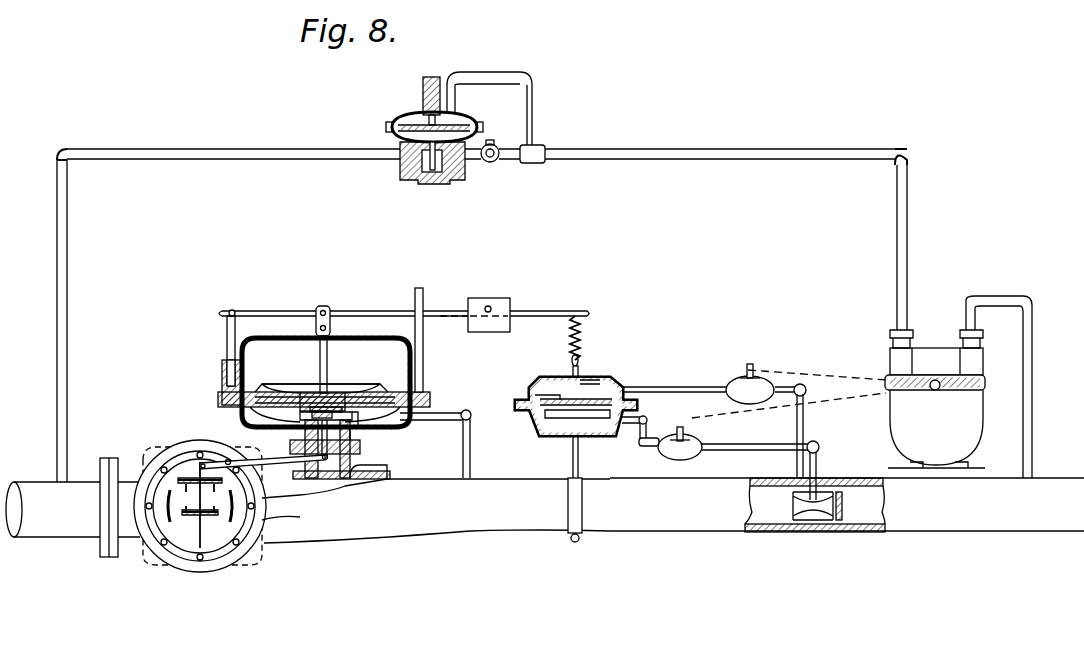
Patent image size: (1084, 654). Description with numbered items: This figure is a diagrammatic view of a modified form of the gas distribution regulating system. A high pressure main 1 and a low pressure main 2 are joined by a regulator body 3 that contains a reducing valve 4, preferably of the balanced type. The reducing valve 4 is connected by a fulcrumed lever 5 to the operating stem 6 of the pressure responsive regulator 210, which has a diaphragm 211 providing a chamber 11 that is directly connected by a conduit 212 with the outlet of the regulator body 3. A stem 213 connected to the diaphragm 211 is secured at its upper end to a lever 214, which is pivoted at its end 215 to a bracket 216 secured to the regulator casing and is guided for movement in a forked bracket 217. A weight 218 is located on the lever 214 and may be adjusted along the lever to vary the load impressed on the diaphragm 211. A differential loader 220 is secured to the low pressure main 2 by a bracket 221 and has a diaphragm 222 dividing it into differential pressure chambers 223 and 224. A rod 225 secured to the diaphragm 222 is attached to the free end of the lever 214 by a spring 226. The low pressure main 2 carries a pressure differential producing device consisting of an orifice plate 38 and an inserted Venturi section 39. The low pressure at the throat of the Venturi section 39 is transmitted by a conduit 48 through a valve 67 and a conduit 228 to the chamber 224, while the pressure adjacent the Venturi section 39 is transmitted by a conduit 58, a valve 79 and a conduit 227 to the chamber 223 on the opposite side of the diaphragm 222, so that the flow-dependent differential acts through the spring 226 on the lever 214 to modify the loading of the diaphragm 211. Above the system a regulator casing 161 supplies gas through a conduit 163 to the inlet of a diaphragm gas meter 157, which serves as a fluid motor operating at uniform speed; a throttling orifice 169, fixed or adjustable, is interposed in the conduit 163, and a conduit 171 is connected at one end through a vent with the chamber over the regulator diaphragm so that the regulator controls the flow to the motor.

The high pressure main 1 is at (72, 512).
The low pressure main 2 is at (672, 510).
The regulator body 3 is at (410, 515).
The reducing valve 4 is at (228, 540).
The fulcrumed lever 5 is at (275, 466).
The operating stem 6 is at (352, 432).
The fluid pressure responsive chamber 11 is at (398, 414).
The orifice plate 38 is at (850, 530).
The Venturi section 39 is at (797, 530).
The conduit 48 is at (820, 452).
The conduit 58 is at (800, 405).
The valve 67 is at (662, 452).
The valve 79 is at (740, 378).
The diaphragm gas meter 157 is at (918, 412).
The regulator casing 161 is at (395, 135).
The conduit 163 is at (726, 150).
The throttling orifice 169 is at (490, 163).
The conduit 171 is at (537, 112).
The regulator 210 is at (222, 383).
The diaphragm 211 is at (280, 392).
The conduit 212 is at (463, 460).
The stem 213 is at (328, 366).
The lever 214 is at (363, 311).
The pivoted end 215 is at (233, 310).
The bracket 216 is at (227, 333).
The forked bracket 217 is at (430, 355).
The weight 218 is at (498, 298).
The differential loader 220 is at (583, 388).
The bracket 221 is at (573, 462).
The diaphragm 222 is at (535, 392).
The differential pressure chamber 223 is at (590, 388).
The differential pressure chamber 224 is at (545, 418).
The rod 225 is at (568, 365).
The spring 226 is at (570, 332).
The conduit 227 is at (670, 383).
The conduit 228 is at (642, 430).